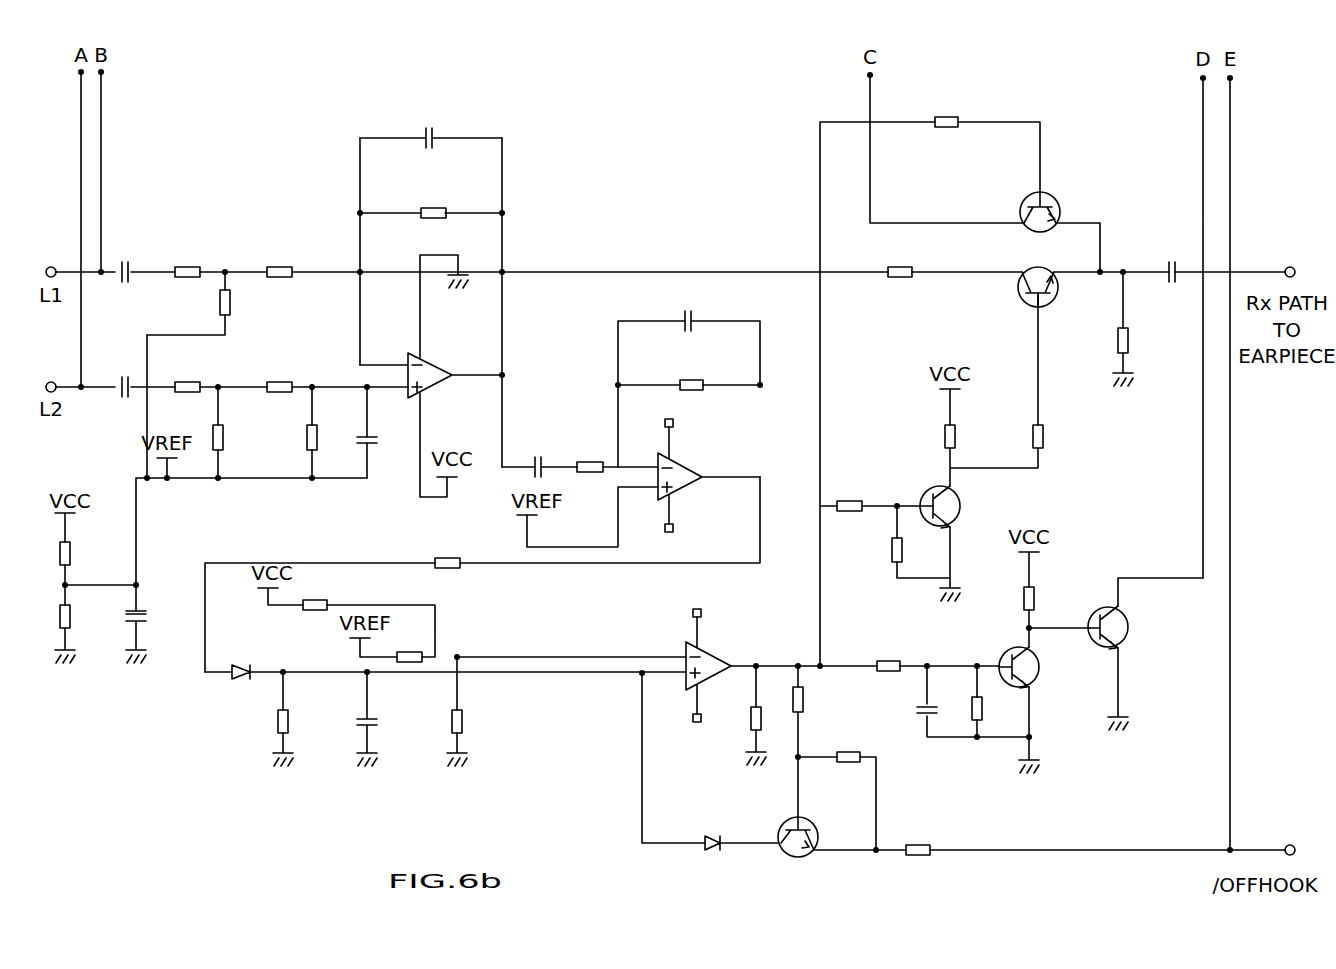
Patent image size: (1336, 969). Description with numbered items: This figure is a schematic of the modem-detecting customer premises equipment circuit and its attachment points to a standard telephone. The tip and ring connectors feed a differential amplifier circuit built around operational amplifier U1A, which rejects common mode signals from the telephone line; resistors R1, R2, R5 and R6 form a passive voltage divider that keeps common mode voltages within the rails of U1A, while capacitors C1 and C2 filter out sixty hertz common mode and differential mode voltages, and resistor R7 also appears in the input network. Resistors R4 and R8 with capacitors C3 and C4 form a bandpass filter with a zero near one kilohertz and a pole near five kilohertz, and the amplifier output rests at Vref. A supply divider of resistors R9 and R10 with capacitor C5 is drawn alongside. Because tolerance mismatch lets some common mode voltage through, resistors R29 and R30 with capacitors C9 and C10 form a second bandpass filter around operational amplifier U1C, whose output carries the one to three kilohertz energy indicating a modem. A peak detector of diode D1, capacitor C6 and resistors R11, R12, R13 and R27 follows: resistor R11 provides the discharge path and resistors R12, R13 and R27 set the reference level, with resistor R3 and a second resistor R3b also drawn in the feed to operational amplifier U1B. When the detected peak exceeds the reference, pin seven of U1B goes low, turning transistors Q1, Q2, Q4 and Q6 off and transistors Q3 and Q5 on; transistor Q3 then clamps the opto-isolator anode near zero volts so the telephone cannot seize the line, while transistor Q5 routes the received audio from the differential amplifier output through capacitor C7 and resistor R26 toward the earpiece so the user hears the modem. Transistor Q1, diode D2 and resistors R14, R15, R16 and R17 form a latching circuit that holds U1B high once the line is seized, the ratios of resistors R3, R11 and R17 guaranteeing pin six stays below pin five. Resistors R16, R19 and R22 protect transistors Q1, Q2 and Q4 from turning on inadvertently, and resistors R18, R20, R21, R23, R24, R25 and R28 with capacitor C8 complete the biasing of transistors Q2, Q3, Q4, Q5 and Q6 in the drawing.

The capacitor C1 is at (125, 259).
The resistor R1 is at (187, 257).
The resistor R3 is at (280, 257).
The resistor R2 is at (205, 303).
The capacitor C3 is at (431, 123).
The resistor R4 is at (431, 199).
The capacitor C2 is at (125, 374).
The resistor R5 is at (187, 371).
The resistor R7 is at (280, 371).
The resistor R6 is at (234, 432).
The resistor R8 is at (296, 432).
The capacitor C4 is at (352, 432).
The resistor R9 is at (81, 572).
The resistor R10 is at (85, 633).
The capacitor C5 is at (152, 624).
The operational amplifier U1A is at (431, 354).
The capacitor C9 is at (539, 455).
The resistor R29 is at (614, 452).
The capacitor C10 is at (689, 377).
The resistor R30 is at (689, 371).
The operational amplifier U1C is at (696, 466).
The resistor R3 (second instance) R3b is at (448, 548).
The resistor R27 is at (314, 591).
The resistor R13 is at (409, 642).
The diode D1 is at (229, 660).
The resistor R11 is at (303, 719).
The capacitor C6 is at (383, 719).
The resistor R12 is at (477, 711).
The operational amplifier U1B is at (725, 652).
The resistor R14 is at (736, 715).
The resistor R15 is at (821, 689).
The resistor R16 is at (847, 744).
The transistor Q1 is at (808, 823).
The diode D2 is at (739, 830).
The resistor R17 is at (917, 836).
The resistor R18 is at (887, 652).
The capacitor C8 is at (911, 709).
The resistor R19 is at (999, 709).
The transistor Q2 is at (1034, 665).
The resistor R20 is at (1052, 598).
The transistor Q3 is at (1123, 621).
The resistor R21 is at (849, 492).
The resistor R22 is at (874, 557).
The transistor Q4 is at (956, 500).
The resistor R23 is at (973, 438).
The resistor R24 is at (1062, 438).
The resistor R25 is at (945, 109).
The transistor Q6 is at (1025, 201).
The resistor R28 is at (899, 259).
The transistor Q5 is at (1024, 292).
The capacitor C7 is at (1172, 260).
The resistor R26 is at (1143, 329).